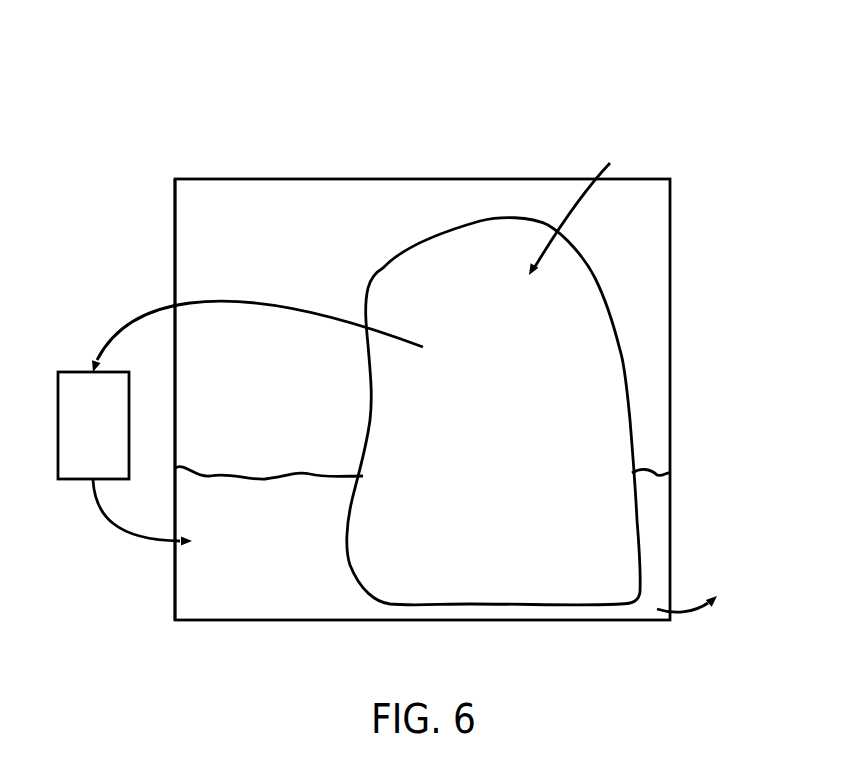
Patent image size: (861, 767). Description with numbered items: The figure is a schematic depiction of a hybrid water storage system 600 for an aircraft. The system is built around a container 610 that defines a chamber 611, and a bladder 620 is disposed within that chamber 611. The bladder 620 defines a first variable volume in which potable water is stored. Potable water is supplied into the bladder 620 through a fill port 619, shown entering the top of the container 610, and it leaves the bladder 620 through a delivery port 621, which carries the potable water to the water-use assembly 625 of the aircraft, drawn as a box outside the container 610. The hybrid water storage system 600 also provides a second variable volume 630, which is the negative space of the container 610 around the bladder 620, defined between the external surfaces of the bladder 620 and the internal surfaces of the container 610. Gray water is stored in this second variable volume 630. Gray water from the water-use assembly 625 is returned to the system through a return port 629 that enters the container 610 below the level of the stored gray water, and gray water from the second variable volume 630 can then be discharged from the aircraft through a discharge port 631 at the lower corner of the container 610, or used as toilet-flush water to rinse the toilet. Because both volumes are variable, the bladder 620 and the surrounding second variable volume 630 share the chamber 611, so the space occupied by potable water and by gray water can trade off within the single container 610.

The hybrid water storage system 600 is at (92, 97).
The container 610 is at (175, 206).
The chamber 611 is at (188, 242).
The fill port 619 is at (575, 197).
The bladder 620 is at (627, 376).
The delivery port 621 is at (157, 308).
The water-use assembly 625 is at (93, 425).
The return port 629 is at (120, 537).
The second variable volume 630 is at (273, 557).
The discharge port 631 is at (688, 615).